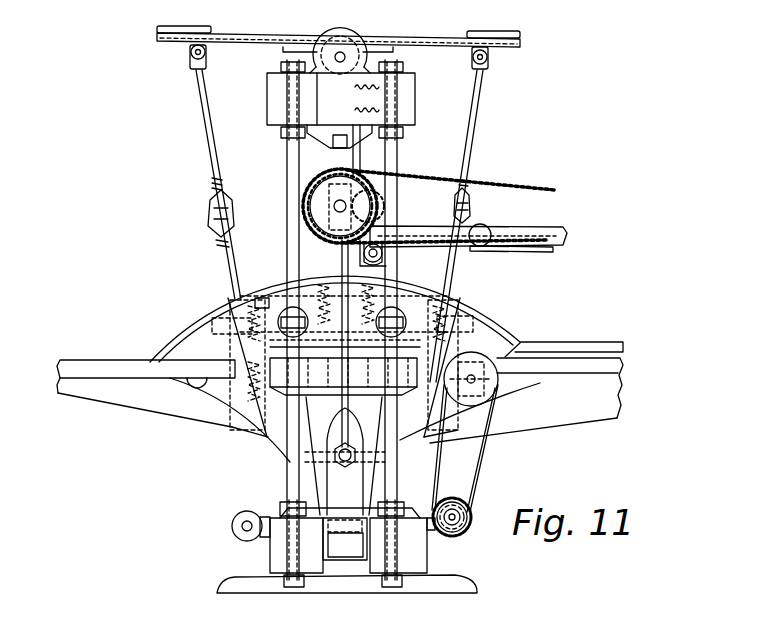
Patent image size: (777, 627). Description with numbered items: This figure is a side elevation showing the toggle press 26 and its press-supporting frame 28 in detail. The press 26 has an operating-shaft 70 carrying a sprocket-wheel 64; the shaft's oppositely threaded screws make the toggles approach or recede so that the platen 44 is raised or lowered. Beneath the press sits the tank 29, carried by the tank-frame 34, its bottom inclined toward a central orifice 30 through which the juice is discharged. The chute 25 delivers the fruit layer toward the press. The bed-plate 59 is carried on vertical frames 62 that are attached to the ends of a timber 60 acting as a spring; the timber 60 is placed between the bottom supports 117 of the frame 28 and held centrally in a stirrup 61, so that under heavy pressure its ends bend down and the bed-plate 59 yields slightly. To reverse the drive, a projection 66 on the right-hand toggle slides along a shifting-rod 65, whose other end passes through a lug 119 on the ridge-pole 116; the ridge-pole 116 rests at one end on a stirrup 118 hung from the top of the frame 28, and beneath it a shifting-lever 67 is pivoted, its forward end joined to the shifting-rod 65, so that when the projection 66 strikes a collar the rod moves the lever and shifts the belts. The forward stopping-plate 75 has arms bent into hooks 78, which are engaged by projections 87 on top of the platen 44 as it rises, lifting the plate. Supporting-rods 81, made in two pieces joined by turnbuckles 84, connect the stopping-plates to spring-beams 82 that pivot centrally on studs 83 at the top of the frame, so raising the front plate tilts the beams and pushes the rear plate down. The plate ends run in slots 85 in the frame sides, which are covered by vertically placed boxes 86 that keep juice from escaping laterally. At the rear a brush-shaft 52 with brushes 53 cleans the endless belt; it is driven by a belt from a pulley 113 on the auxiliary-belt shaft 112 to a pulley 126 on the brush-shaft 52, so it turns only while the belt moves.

The chute 25 is at (545, 345).
The press 26 is at (350, 166).
The press-supporting frame 28 is at (402, 90).
The tank 29 is at (163, 402).
The orifice 30 is at (358, 458).
The tank-frame 34 is at (130, 380).
The platen 44 is at (225, 330).
The brush-shaft 52 is at (453, 500).
The brushes 53 is at (467, 510).
The bed-plate 59 is at (290, 431).
The timber 60 is at (335, 545).
The stirrup 61 is at (340, 560).
The vertical frames 62 is at (369, 487).
The sprocket-wheel 64 is at (322, 200).
The shifting-rod 65 is at (380, 214).
The projection 66 is at (372, 198).
The shifting-lever 67 is at (522, 250).
The operating-shaft 70 is at (336, 209).
The forward stopping-plate 75 is at (262, 362).
The hooks 78 is at (246, 316).
The supporting-rods 81 is at (226, 263).
The spring-beams 82 is at (407, 38).
The studs 83 is at (346, 40).
The turnbuckles 84 is at (214, 206).
The slots 85 is at (238, 300).
The boxes 86 is at (255, 415).
The projections 87 is at (261, 298).
The auxiliary-belt shaft 112 is at (474, 392).
The pulley 113 is at (490, 353).
The ridge-pole 116 is at (548, 233).
The bottom supports 117 is at (283, 563).
The stirrup 118 is at (398, 166).
The lug 119 is at (340, 249).
The pulley 126 is at (470, 522).